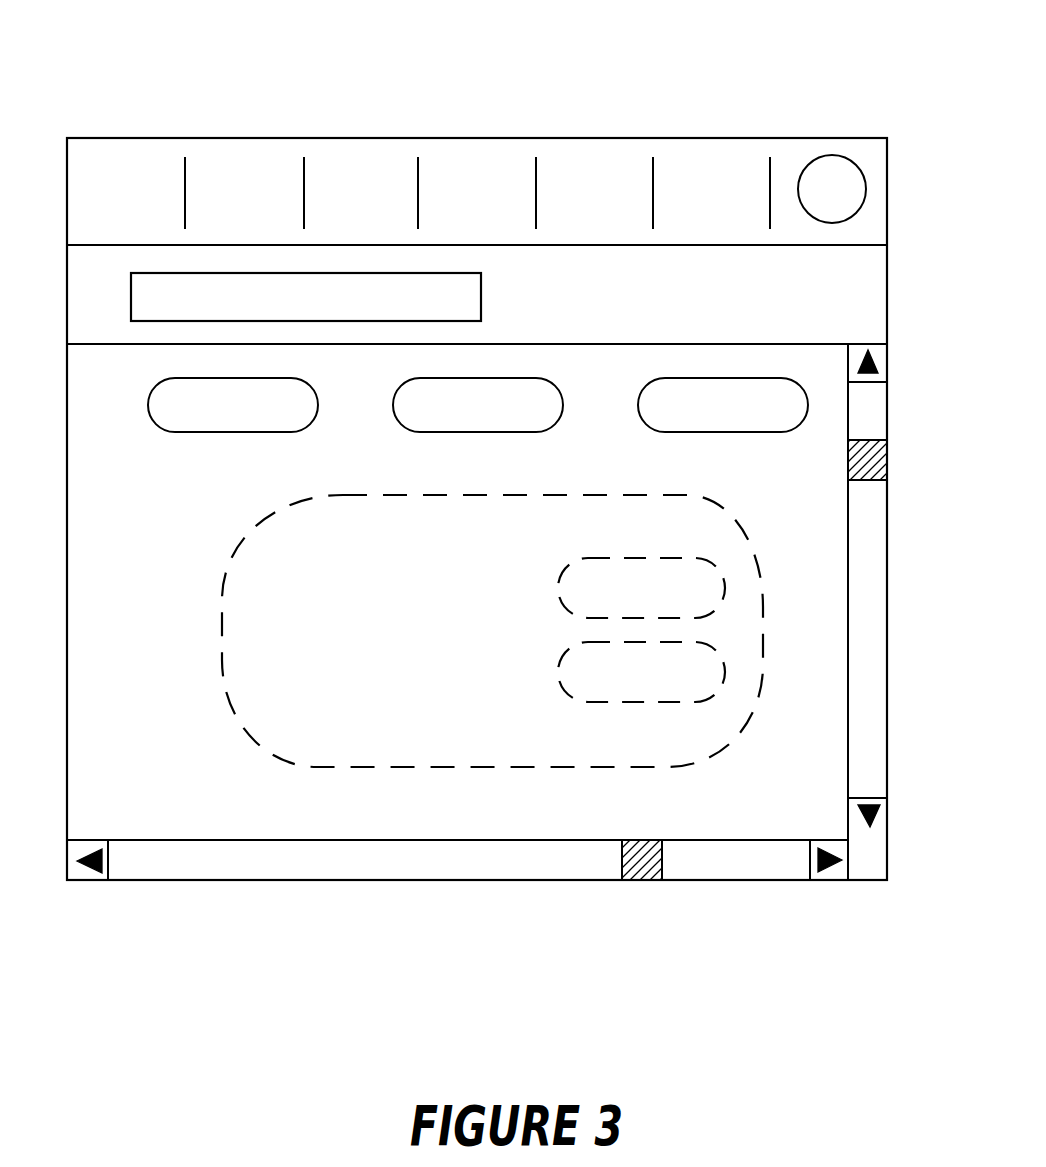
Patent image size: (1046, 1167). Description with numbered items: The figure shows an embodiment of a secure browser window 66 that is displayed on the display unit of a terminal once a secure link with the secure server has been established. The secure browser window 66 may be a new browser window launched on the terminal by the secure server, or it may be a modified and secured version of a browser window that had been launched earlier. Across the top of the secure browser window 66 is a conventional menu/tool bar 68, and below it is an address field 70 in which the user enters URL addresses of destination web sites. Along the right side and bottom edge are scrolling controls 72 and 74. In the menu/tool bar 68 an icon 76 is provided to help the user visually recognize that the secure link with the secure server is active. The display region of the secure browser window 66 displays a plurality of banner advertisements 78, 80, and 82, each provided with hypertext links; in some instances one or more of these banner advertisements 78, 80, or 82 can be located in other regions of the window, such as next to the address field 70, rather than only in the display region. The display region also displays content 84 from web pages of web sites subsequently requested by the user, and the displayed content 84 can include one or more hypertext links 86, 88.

The secure browser window 66 is at (368, 90).
The menu/tool bar 68 is at (123, 165).
The address field 70 is at (473, 302).
The scrolling control 72 is at (880, 602).
The scrolling control 74 is at (444, 873).
The icon 76 is at (827, 170).
The banner advertisement 78 is at (302, 393).
The banner advertisement 80 is at (546, 393).
The banner advertisement 82 is at (790, 392).
The content 84 is at (278, 750).
The hypertext link 86 is at (697, 613).
The hypertext link 88 is at (677, 698).